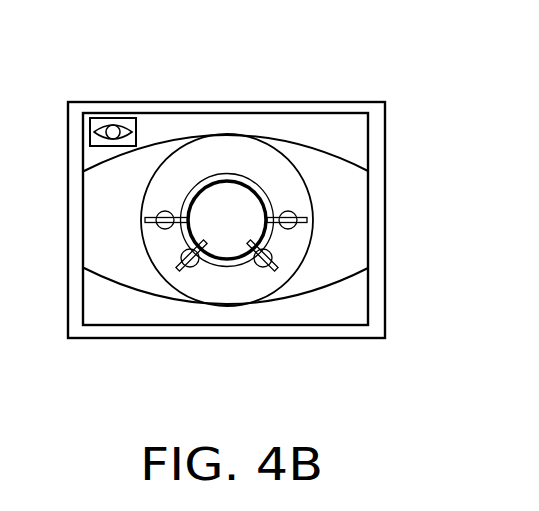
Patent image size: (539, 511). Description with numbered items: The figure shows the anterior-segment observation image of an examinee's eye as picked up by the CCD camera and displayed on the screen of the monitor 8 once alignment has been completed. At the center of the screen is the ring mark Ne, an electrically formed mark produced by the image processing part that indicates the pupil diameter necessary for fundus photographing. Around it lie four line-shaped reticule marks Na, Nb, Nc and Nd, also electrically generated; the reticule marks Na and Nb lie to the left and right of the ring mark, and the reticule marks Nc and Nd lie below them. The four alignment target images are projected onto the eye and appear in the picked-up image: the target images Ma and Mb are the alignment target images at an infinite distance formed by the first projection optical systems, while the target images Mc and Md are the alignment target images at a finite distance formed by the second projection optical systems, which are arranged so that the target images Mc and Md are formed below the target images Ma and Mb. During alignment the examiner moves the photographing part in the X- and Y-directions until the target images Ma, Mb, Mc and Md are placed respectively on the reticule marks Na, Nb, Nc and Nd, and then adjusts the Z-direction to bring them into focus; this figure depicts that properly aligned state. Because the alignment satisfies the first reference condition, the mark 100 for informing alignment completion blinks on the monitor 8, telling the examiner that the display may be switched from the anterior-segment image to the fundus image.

The mark for informing alignment completion 100 is at (113, 116).
The monitor 8 is at (362, 102).
The ring mark Ne is at (228, 177).
The reticule mark Na is at (146, 227).
The target image Ma is at (160, 214).
The reticule mark Nb is at (297, 227).
The target image Mb is at (286, 212).
The reticule mark Nc is at (183, 265).
The target image Mc is at (190, 262).
The reticule mark Nd is at (266, 265).
The target image Md is at (273, 260).